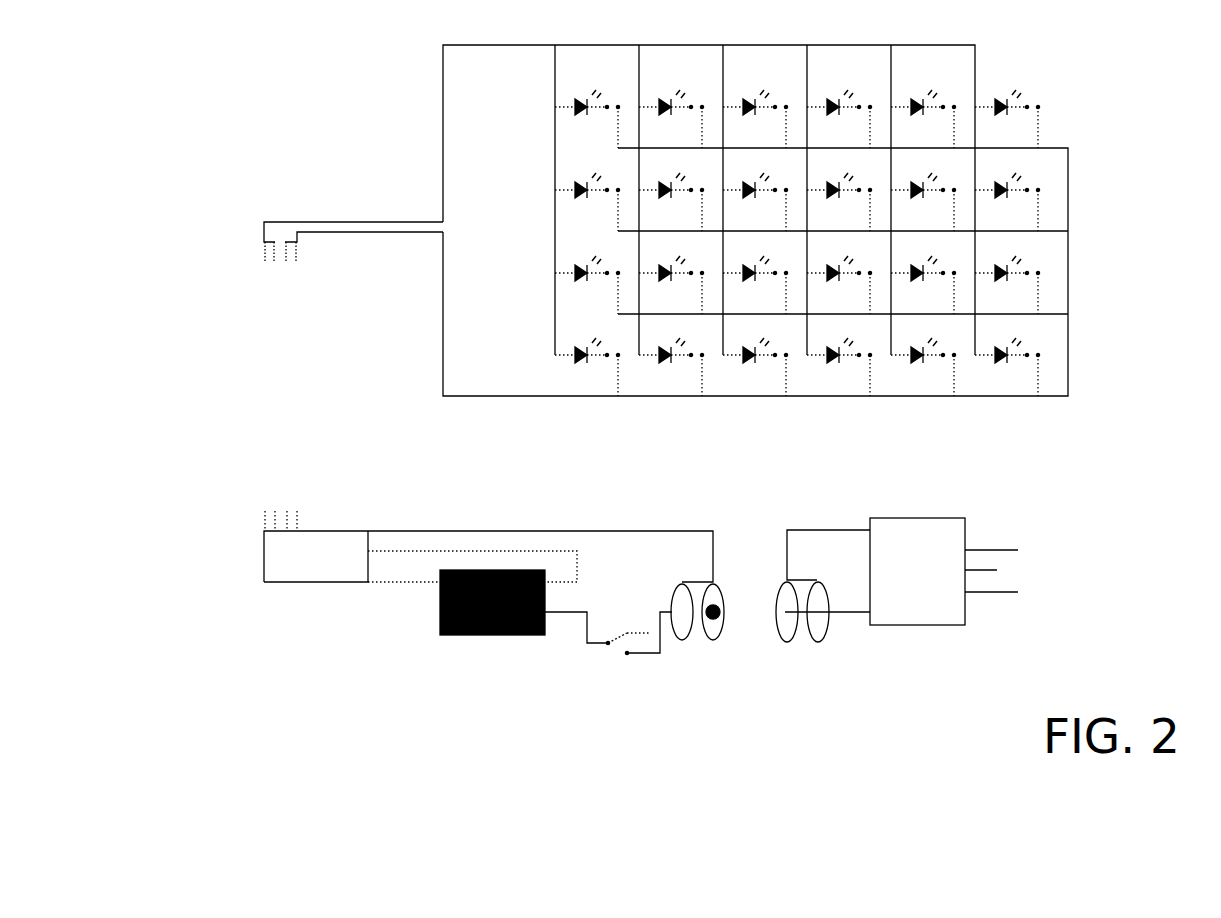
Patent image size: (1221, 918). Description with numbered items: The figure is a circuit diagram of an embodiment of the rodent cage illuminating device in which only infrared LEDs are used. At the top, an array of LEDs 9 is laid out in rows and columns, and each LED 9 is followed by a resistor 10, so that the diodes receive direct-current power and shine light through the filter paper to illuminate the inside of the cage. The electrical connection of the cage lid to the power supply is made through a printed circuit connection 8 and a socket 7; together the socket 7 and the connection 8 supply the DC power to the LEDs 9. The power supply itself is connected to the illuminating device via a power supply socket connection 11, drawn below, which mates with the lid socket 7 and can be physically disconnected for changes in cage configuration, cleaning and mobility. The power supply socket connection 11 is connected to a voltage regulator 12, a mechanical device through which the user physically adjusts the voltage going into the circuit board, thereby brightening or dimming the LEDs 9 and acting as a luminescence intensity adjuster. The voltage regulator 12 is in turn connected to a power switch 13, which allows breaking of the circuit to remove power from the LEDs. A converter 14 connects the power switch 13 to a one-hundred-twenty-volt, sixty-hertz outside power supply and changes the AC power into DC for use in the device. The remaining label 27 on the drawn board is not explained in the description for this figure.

The socket 7 is at (253, 245).
The printed circuit connection 8 is at (295, 215).
The LED 9 is at (578, 104).
The resistor 10 is at (610, 130).
The power supply socket connection 11 is at (260, 472).
The voltage regulator 12 is at (432, 628).
The power switch 13 is at (608, 653).
The converter 14 is at (935, 512).
The LED panel 27 is at (432, 147).